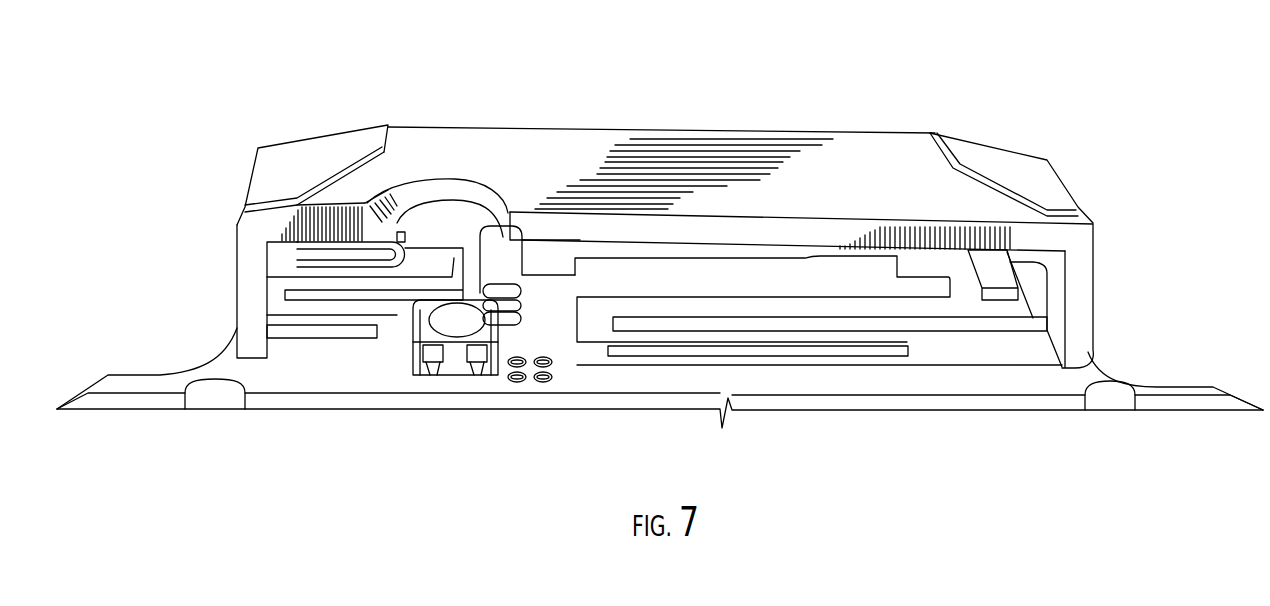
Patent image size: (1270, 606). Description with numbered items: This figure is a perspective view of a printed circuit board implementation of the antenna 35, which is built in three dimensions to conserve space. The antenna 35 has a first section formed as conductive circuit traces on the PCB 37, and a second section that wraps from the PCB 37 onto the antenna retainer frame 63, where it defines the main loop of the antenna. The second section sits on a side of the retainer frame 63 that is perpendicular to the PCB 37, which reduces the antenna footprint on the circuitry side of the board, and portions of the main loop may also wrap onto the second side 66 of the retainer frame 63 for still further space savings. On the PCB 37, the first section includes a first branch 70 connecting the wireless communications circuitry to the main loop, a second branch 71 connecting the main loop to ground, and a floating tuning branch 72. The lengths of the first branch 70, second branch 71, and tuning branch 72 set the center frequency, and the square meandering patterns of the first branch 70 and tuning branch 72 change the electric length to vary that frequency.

The antenna 35 is at (314, 110).
The PCB 37 is at (634, 397).
The antenna retainer frame 63 is at (1103, 252).
The second side of the retainer frame 66 is at (768, 155).
The first branch 70 is at (396, 316).
The second branch 71 is at (509, 320).
The tuning branch 72 is at (902, 362).